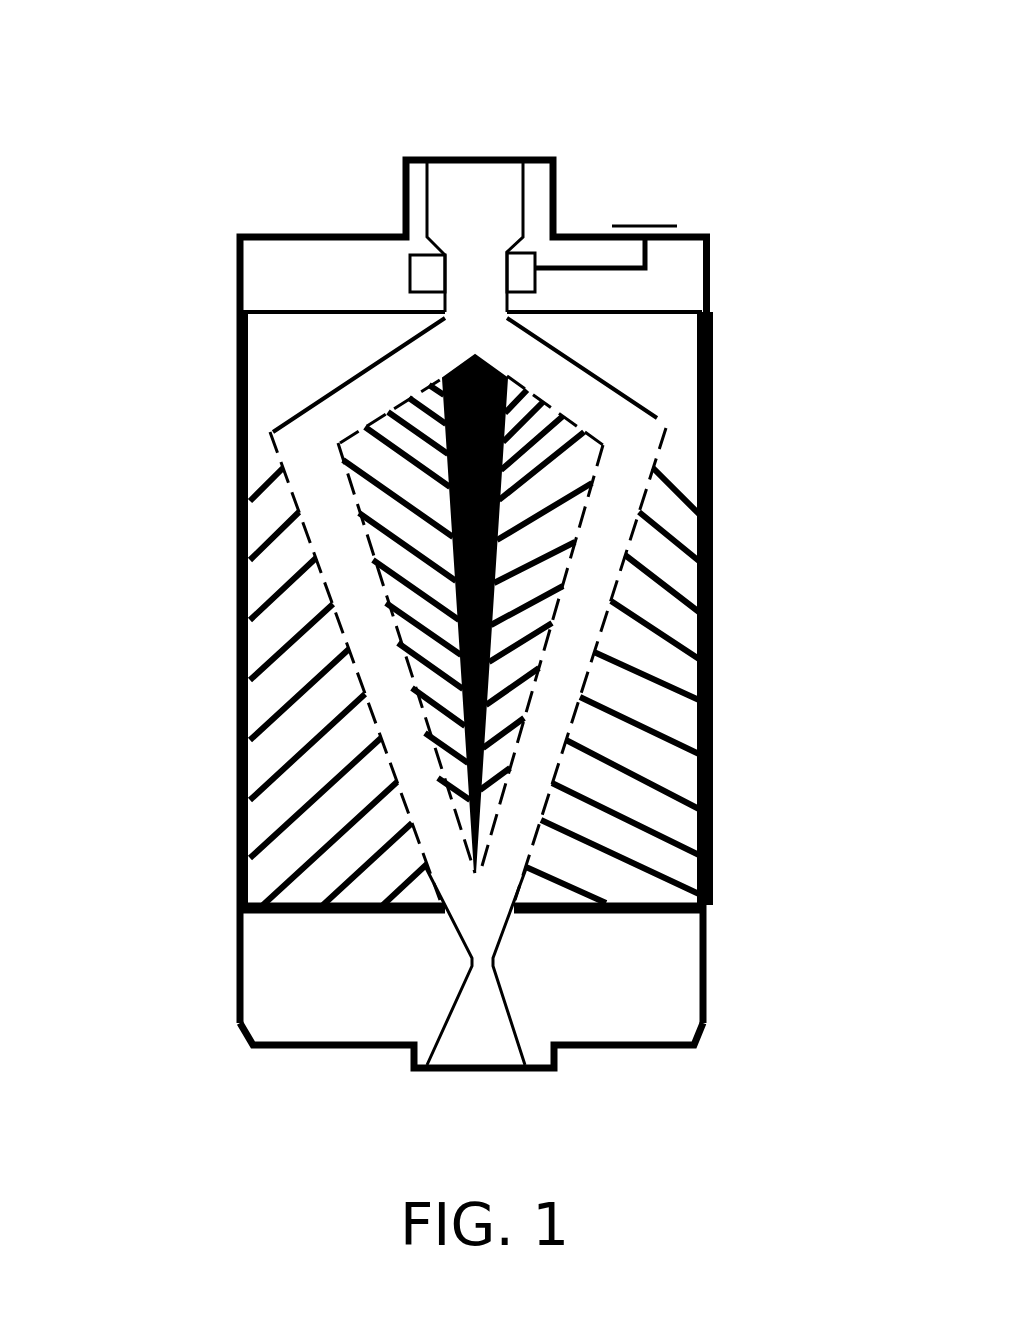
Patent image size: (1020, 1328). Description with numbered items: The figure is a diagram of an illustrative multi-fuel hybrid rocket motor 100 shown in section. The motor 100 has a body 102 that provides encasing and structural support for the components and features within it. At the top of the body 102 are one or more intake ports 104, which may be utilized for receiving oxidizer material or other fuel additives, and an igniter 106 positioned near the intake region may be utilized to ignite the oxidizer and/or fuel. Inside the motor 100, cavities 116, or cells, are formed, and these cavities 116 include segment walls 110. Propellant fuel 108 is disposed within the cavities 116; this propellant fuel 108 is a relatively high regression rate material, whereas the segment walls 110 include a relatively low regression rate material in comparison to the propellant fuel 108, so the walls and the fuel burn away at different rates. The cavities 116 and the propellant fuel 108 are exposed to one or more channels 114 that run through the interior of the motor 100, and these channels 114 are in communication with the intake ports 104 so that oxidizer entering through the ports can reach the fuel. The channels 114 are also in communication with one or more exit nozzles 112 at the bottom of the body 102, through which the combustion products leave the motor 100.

The multi-fuel hybrid rocket motor 100 is at (463, 75).
The body 102 is at (236, 300).
The intake ports 104 is at (463, 210).
The igniter 106 is at (437, 270).
The propellant fuel 108 is at (583, 450).
The segment walls 110 is at (288, 720).
The exit nozzles 112 is at (482, 1030).
The channels 114 is at (320, 464).
The cavities 116 is at (627, 593).